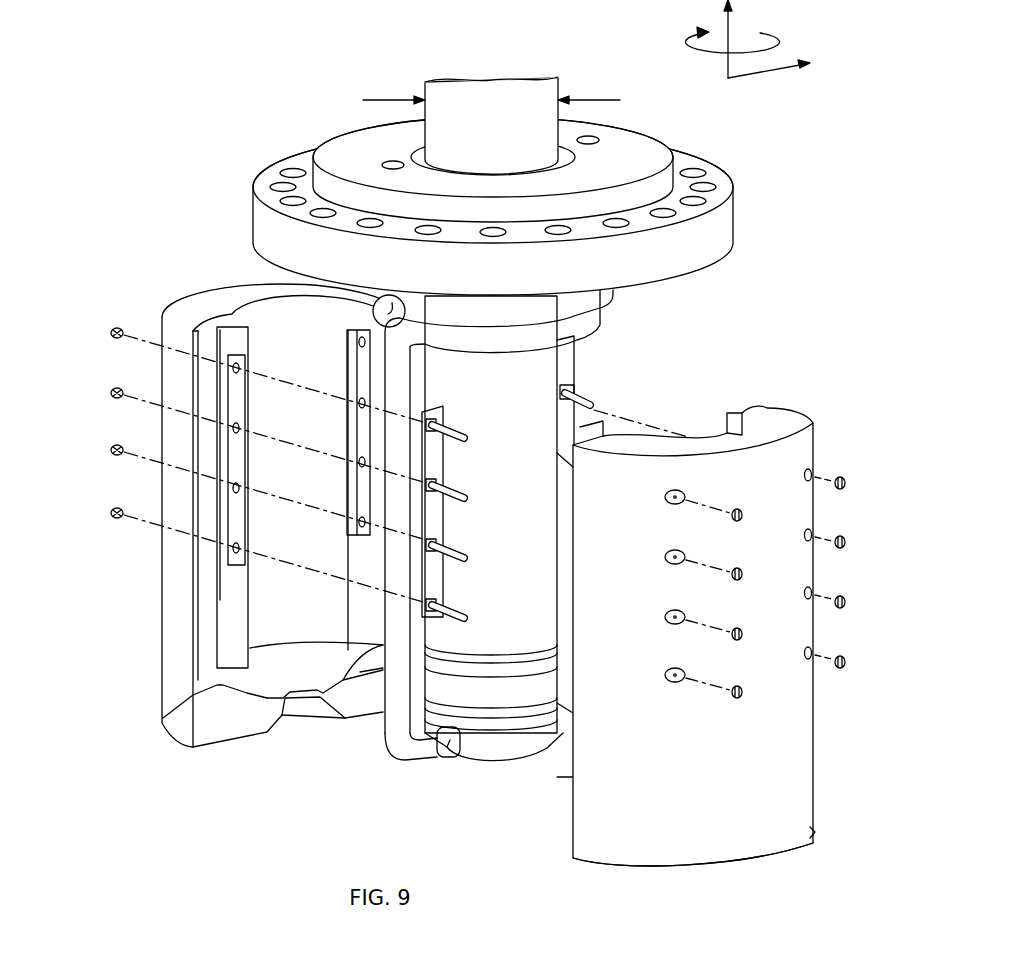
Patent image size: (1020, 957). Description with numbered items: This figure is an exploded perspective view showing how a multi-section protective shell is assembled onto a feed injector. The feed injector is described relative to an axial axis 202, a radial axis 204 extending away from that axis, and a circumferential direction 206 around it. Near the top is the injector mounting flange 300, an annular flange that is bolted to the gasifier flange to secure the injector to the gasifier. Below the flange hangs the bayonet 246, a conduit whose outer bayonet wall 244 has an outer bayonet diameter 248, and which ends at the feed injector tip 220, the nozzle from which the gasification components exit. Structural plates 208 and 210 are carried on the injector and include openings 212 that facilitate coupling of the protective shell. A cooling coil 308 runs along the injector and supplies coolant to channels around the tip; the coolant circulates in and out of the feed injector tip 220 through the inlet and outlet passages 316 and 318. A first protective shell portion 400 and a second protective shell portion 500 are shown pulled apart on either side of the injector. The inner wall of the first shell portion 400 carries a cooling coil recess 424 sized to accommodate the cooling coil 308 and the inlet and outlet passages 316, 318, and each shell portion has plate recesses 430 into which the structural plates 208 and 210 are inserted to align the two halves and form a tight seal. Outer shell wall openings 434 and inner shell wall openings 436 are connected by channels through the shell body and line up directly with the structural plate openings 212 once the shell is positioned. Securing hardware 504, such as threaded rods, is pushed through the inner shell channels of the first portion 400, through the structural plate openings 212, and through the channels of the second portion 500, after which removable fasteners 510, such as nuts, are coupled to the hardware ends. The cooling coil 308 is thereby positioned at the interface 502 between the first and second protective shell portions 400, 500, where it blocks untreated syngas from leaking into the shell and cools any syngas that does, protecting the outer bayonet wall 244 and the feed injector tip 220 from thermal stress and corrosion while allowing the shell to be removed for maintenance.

The axial axis 202 is at (730, 30).
The radial axis 204 is at (762, 73).
The circumferential direction 206 is at (705, 50).
The structural plate 208 is at (440, 418).
The structural plate 210 is at (570, 352).
The structural plate openings 212 is at (447, 542).
The feed injector tip 220 is at (497, 767).
The outer bayonet wall 244 is at (481, 647).
The bayonet 246 is at (487, 63).
The outer bayonet diameter 248 is at (592, 97).
The injector mounting flange 300 is at (330, 128).
The cooling coil 308 is at (383, 733).
The inlet passage 316 is at (565, 735).
The outlet passage 318 is at (437, 756).
The first protective shell portion 400 is at (183, 298).
The cooling coil recess 424 is at (163, 716).
The plate recess 430 is at (348, 378).
The outer shell wall openings 434 is at (665, 497).
The inner shell wall openings 436 is at (232, 490).
The second protective shell portion 500 is at (795, 410).
The interface 502 is at (226, 765).
The securing hardware 504 is at (460, 436).
The removable fasteners 510 is at (110, 335).